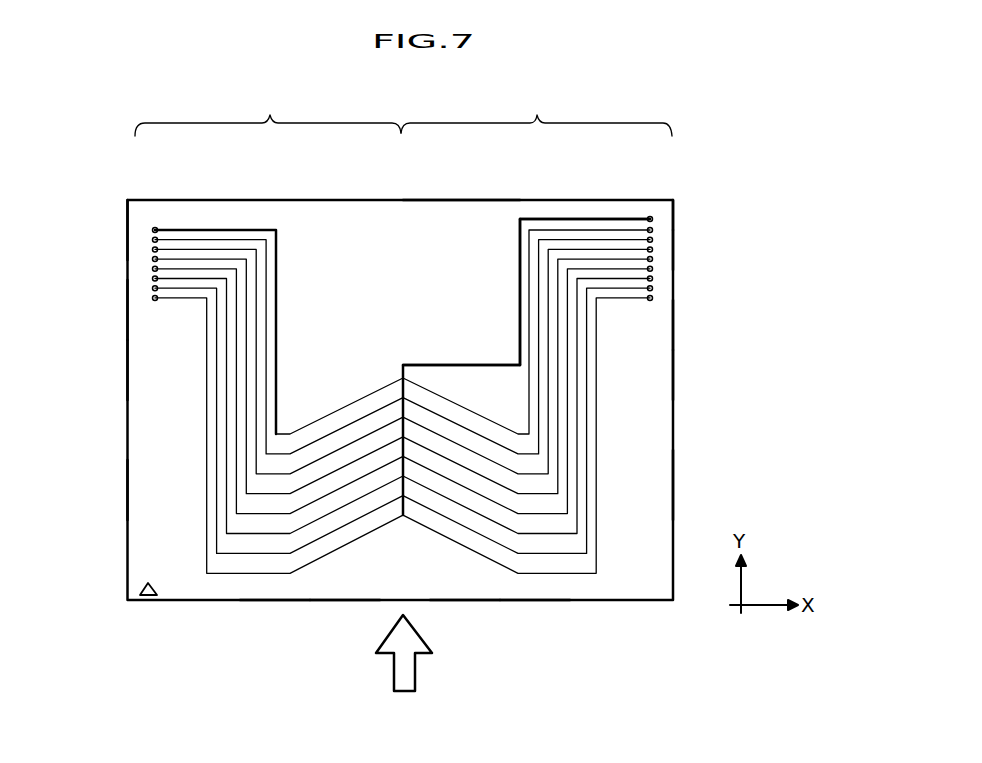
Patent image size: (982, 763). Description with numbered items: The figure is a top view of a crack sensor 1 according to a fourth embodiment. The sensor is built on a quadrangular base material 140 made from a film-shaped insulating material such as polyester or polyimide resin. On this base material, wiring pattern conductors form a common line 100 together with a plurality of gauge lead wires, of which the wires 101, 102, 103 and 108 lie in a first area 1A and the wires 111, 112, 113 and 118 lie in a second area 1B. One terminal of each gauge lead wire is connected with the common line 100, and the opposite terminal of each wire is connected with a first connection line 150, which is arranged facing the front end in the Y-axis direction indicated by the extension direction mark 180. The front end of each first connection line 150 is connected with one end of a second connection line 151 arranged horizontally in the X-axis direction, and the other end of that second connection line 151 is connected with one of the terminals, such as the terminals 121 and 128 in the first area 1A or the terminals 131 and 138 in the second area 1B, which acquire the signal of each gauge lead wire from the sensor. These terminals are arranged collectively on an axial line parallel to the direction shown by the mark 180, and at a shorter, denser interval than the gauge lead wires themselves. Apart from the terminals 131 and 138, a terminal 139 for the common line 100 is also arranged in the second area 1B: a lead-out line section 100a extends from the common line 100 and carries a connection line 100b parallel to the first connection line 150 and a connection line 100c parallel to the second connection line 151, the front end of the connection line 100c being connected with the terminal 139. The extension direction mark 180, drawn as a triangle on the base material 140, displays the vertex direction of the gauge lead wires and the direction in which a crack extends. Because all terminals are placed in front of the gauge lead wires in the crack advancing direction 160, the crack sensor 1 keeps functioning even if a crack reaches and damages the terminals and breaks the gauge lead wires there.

The crack sensor 1 is at (401, 379).
The first area 1A is at (268, 110).
The second area 1B is at (536, 110).
The common line 100 is at (402, 367).
The lead-out line section 100a is at (465, 364).
The connection line 100b is at (518, 256).
The connection line 100c is at (571, 218).
The gauge lead wire 101 is at (345, 619).
The gauge lead wire 102 is at (275, 622).
The gauge lead wire 103 is at (100, 490).
The gauge lead wire 108 is at (90, 368).
The gauge lead wire 111 is at (465, 617).
The gauge lead wire 112 is at (535, 621).
The gauge lead wire 113 is at (708, 485).
The gauge lead wire 118 is at (714, 371).
The terminal 121 is at (90, 310).
The terminal 128 is at (90, 224).
The terminal 131 is at (711, 325).
The terminal 138 is at (710, 229).
The terminal 139 is at (705, 197).
The base material 140 is at (461, 179).
The first connection line 150 is at (528, 384).
The second connection line 151 is at (257, 228).
The crack advancing direction 160 is at (434, 653).
The extension direction mark 180 is at (104, 569).